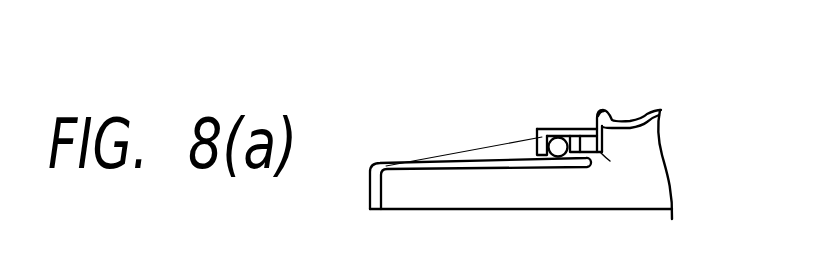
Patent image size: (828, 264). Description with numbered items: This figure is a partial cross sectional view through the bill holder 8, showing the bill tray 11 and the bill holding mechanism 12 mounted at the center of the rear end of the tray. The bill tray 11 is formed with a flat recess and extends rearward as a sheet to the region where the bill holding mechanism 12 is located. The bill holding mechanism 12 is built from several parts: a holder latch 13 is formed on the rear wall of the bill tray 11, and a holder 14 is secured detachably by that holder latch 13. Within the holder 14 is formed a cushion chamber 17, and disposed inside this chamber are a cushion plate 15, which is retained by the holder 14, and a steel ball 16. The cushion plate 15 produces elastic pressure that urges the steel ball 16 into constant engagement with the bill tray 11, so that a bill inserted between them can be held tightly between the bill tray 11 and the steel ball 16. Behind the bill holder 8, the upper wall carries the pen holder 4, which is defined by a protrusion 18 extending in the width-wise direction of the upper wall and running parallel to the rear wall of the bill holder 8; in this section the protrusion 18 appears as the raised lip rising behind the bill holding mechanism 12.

The pen holder 4 is at (661, 118).
The bill holder 8 is at (432, 124).
The bill tray 11 is at (471, 153).
The bill holding mechanism 12 is at (573, 96).
The holder latch 13 is at (603, 153).
The holder 14 is at (553, 128).
The cushion plate 15 is at (545, 128).
The steel ball 16 is at (542, 134).
The cushion chamber 17 is at (578, 125).
The protrusion 18 is at (608, 113).